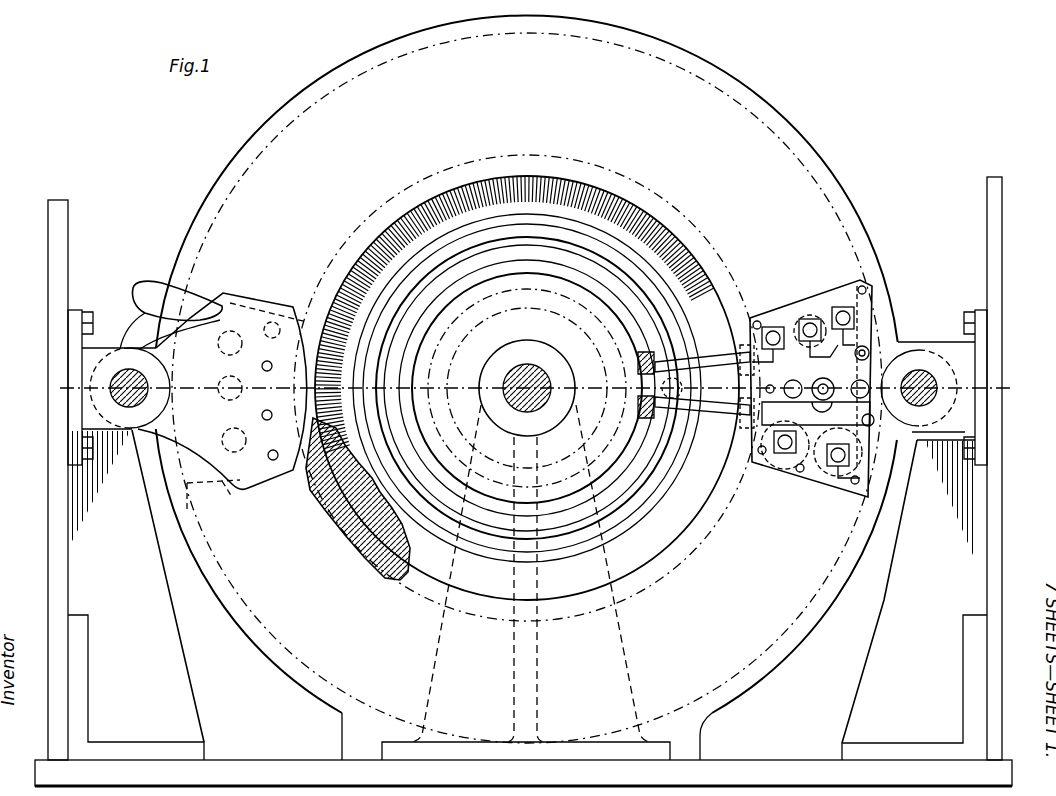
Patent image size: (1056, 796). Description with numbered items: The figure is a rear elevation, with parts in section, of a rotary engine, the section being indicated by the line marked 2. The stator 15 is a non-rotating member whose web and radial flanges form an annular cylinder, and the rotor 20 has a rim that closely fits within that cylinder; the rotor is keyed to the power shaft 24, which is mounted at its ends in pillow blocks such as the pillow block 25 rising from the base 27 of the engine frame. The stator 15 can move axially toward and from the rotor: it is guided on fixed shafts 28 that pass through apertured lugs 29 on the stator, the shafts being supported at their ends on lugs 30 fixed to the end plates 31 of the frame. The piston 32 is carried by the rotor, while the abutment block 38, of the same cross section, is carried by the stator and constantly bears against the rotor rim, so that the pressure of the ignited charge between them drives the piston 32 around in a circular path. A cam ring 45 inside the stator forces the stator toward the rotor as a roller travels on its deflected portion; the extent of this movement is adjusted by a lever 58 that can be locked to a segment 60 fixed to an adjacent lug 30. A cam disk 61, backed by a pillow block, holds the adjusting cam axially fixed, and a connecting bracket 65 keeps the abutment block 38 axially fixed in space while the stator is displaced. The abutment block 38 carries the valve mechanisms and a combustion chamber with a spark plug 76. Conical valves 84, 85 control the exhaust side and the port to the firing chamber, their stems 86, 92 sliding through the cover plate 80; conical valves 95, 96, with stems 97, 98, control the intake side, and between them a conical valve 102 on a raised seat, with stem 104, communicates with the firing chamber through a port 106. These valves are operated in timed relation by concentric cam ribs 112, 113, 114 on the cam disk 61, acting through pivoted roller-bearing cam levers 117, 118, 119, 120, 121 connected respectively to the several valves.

The section line 2- 2 is at (34, 376).
The stator 15 is at (776, 106).
The rotor 20 is at (272, 618).
The power shaft 24 is at (528, 380).
The pillow block 25 is at (628, 638).
The base 27 is at (290, 762).
The fixed shaft 28 is at (935, 381).
The apertured lug 29 is at (100, 375).
The lug 30 is at (108, 350).
The end plate 31 is at (68, 242).
The piston 32 is at (226, 492).
The abutment block 38 is at (808, 478).
The cam ring 45 is at (385, 532).
The lever 58 is at (225, 302).
The segment 60 is at (203, 434).
The cam disk 61 is at (640, 250).
The connecting bracket 65 is at (816, 401).
The spark plug 76 is at (848, 357).
The cover plate 80 is at (822, 488).
The conical valve 84 is at (832, 476).
The conical valve 85 is at (788, 456).
The valve stem 86 is at (856, 472).
The stem 92 is at (780, 455).
The conical valve 95 is at (778, 328).
The conical valve 96 is at (850, 302).
The valve stem 97 is at (778, 326).
The valve stem 98 is at (852, 308).
The conical valve 102 is at (812, 318).
The valve stem 104 is at (815, 325).
The port 106 is at (862, 358).
The cam rib 112 is at (535, 265).
The cam rib 113 is at (505, 248).
The cam rib 114 is at (478, 237).
The cam operated lever 117 is at (706, 358).
The cam operated lever 118 is at (700, 366).
The cam operated lever 119 is at (690, 412).
The cam operated lever 120 is at (712, 370).
The cam operated lever 121 is at (680, 420).